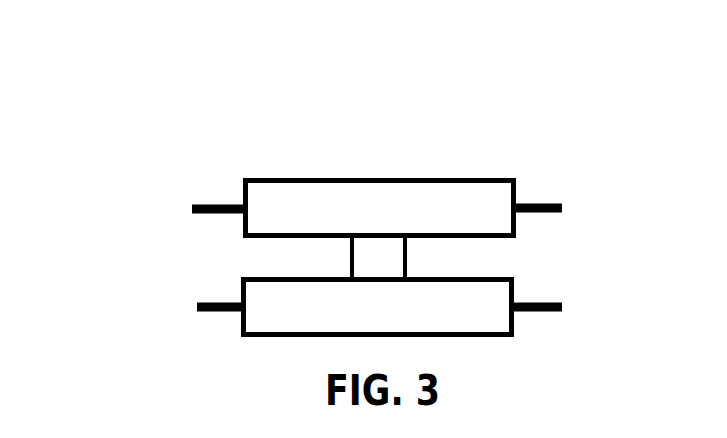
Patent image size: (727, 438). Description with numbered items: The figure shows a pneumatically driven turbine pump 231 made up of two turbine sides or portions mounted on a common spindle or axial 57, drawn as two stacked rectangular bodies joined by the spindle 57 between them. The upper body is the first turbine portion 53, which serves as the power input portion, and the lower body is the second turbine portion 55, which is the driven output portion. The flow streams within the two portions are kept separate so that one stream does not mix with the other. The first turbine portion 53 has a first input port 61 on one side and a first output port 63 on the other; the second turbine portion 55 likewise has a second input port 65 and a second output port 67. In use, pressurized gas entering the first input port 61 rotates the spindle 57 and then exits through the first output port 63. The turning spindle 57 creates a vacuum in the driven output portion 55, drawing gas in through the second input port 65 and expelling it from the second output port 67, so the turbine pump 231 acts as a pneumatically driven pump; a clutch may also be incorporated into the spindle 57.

The pneumatically driven turbine pump 231 is at (128, 116).
The first turbine portion 53 is at (320, 178).
The second turbine portion 55 is at (277, 337).
The spindle 57 is at (408, 257).
The first input port 61 is at (217, 204).
The first output port 63 is at (540, 203).
The second input port 65 is at (218, 303).
The second output port 67 is at (540, 302).